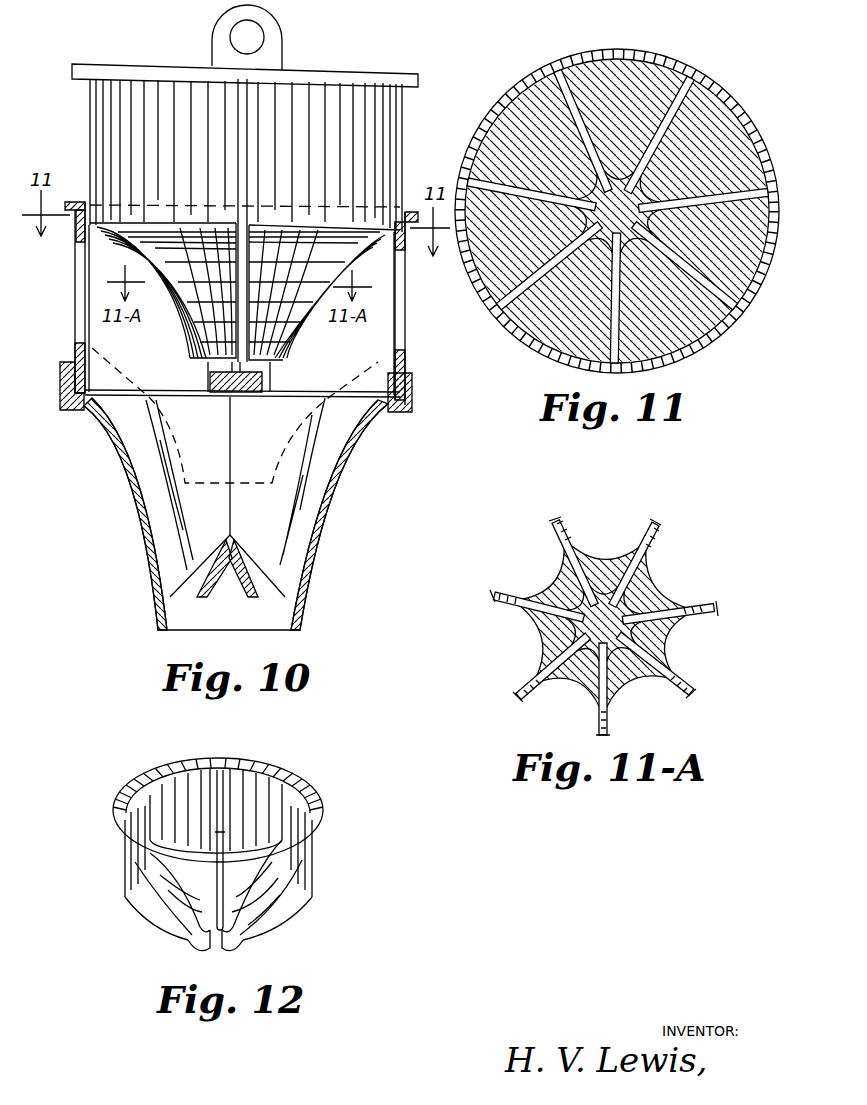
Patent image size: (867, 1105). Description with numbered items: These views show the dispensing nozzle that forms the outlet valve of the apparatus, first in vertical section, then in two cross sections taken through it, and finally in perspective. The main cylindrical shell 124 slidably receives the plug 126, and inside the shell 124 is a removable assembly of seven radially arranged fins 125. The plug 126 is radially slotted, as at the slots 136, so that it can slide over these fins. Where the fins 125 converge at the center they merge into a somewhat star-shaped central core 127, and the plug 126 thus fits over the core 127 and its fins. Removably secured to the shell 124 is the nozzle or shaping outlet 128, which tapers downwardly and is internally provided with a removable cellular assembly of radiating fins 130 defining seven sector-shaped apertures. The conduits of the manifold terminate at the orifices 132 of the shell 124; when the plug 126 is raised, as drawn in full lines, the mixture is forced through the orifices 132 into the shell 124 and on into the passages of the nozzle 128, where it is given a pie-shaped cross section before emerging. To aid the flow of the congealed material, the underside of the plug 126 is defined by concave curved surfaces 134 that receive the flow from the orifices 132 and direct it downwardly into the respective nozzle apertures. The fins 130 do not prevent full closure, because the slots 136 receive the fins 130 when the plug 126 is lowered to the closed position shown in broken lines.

In FIG. 10, the main cylindrical shell 124 is at (397, 215).
In FIG. 11, the main cylindrical shell 124 is at (705, 335).
In FIG. 10, the radially arranged fins 125 is at (105, 330).
In FIG. 11, the radially arranged fins 125 is at (712, 297).
In FIG. 11-A, the radially arranged fins 125 is at (683, 675).
In FIG. 10, the plug 126 is at (345, 70).
In FIG. 11, the plug 126 is at (548, 323).
In FIG. 12, the plug 126 is at (320, 818).
In FIG. 11, the central core 127 is at (640, 195).
In FIG. 11-A, the central core 127 is at (622, 602).
In FIG. 10, the nozzle or shaping outlet 128 is at (333, 494).
In FIG. 10, the radiating fins 130 is at (262, 550).
In FIG. 10, the orifices 132 is at (80, 272).
In FIG. 10, the concave curved surfaces 134 is at (272, 332).
In FIG. 11-A, the concave curved surfaces 134 is at (662, 625).
In FIG. 12, the concave curved surfaces 134 is at (275, 910).
In FIG. 10, the slots 136 is at (243, 175).
In FIG. 12, the slots 136 is at (221, 790).